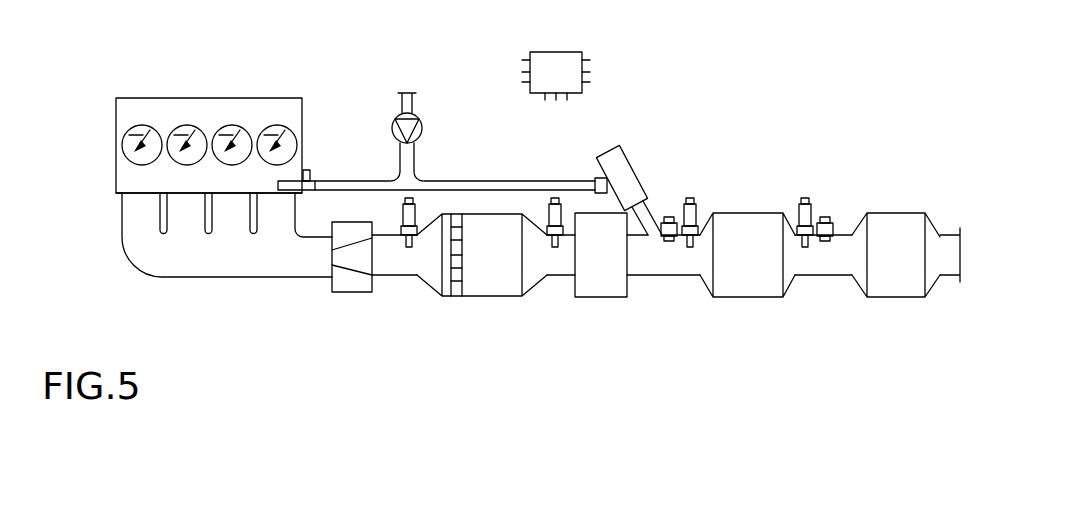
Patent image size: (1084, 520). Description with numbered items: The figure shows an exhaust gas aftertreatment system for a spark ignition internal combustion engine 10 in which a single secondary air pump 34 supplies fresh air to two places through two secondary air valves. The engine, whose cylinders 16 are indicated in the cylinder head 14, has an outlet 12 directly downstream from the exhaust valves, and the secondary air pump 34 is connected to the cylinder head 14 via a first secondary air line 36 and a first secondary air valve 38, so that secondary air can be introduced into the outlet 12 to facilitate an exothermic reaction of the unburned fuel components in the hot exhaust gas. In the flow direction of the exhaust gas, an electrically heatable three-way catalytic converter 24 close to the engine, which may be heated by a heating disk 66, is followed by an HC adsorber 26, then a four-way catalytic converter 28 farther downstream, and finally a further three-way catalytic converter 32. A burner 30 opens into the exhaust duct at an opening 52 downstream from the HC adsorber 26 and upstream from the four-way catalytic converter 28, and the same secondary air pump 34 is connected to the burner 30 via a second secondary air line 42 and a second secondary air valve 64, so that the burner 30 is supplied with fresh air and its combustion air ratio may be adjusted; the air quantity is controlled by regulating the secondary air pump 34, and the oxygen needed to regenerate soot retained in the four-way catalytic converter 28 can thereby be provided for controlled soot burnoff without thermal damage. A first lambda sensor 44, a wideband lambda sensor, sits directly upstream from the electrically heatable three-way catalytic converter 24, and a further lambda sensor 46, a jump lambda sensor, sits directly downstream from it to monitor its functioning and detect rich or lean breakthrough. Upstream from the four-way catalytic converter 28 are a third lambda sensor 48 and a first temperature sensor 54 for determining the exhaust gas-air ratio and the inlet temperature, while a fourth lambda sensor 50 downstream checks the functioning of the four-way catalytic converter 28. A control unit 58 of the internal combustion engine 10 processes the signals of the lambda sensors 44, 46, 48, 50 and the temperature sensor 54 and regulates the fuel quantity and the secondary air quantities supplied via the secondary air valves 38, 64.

The internal combustion engine 10 is at (116, 124).
The outlet 12 is at (150, 249).
The cylinder head 14 is at (126, 178).
The cylinders 16 is at (277, 119).
The electrically heatable three-way catalytic converter 24 is at (505, 285).
The HC adsorber 26 is at (605, 284).
The four-way catalytic converter 28 is at (750, 283).
The burner 30 is at (626, 177).
The further three-way catalytic converter 32 is at (896, 284).
The secondary air pump 34 is at (394, 123).
The first secondary air line 36 is at (348, 185).
The first secondary air valve 38 is at (310, 195).
The second secondary air line 42 is at (475, 185).
The first lambda sensor 44 is at (409, 218).
The further lambda sensor 46 is at (555, 207).
The third lambda sensor 48 is at (693, 207).
The fourth lambda sensor 50 is at (799, 208).
The opening 52 is at (831, 225).
The first temperature sensor 54 is at (666, 225).
The control unit 58 is at (559, 51).
The second secondary air valve 64 is at (595, 172).
The heating disk 66 is at (456, 285).